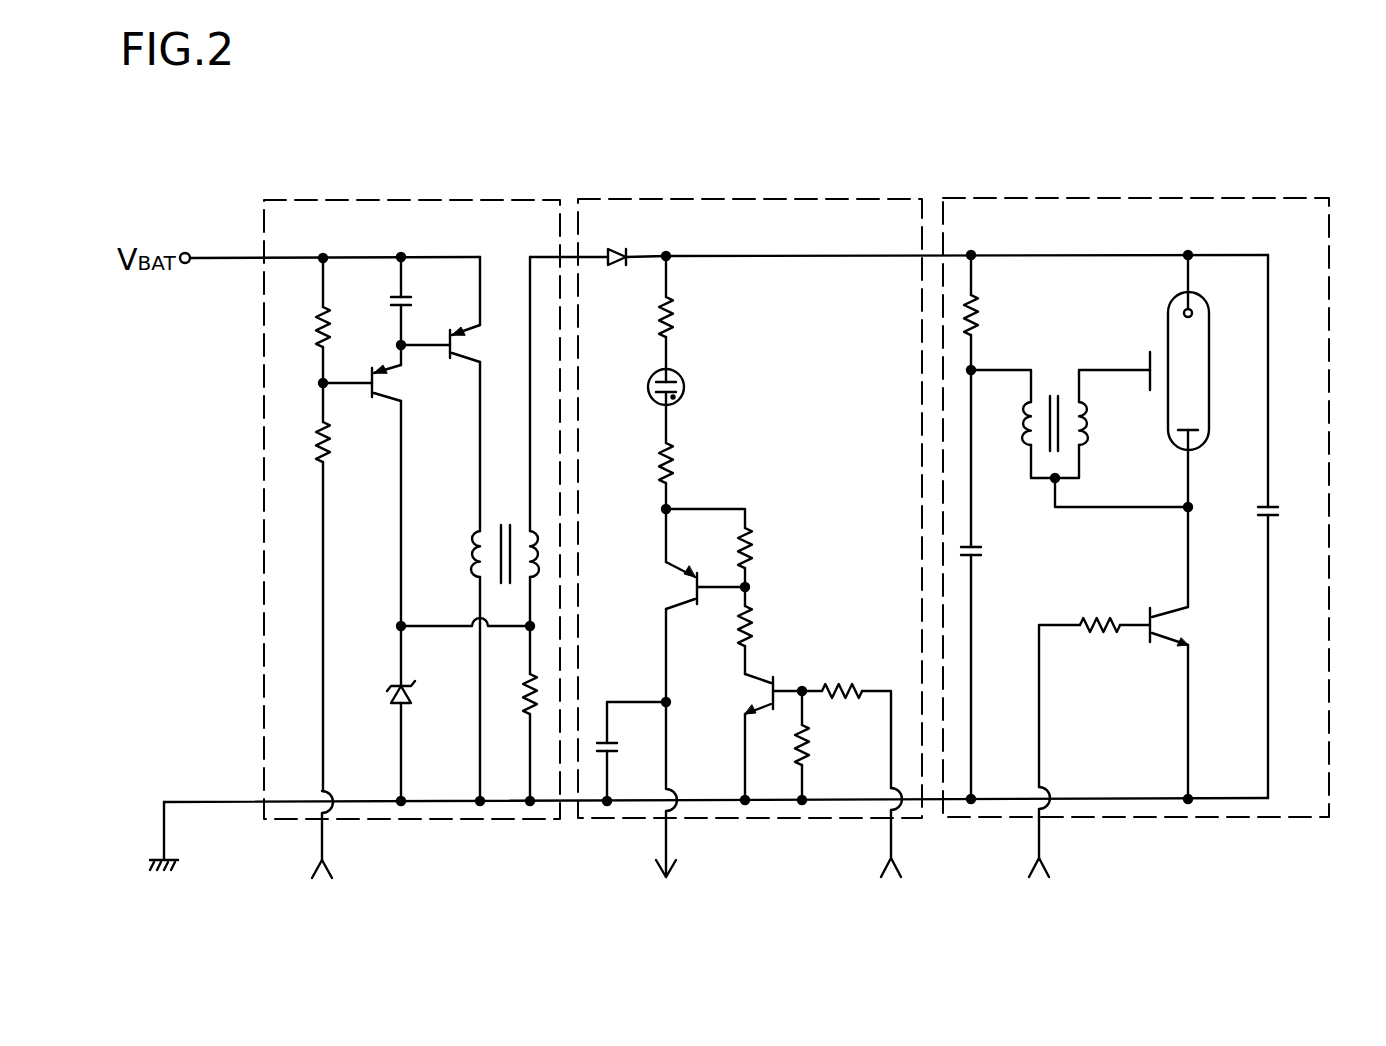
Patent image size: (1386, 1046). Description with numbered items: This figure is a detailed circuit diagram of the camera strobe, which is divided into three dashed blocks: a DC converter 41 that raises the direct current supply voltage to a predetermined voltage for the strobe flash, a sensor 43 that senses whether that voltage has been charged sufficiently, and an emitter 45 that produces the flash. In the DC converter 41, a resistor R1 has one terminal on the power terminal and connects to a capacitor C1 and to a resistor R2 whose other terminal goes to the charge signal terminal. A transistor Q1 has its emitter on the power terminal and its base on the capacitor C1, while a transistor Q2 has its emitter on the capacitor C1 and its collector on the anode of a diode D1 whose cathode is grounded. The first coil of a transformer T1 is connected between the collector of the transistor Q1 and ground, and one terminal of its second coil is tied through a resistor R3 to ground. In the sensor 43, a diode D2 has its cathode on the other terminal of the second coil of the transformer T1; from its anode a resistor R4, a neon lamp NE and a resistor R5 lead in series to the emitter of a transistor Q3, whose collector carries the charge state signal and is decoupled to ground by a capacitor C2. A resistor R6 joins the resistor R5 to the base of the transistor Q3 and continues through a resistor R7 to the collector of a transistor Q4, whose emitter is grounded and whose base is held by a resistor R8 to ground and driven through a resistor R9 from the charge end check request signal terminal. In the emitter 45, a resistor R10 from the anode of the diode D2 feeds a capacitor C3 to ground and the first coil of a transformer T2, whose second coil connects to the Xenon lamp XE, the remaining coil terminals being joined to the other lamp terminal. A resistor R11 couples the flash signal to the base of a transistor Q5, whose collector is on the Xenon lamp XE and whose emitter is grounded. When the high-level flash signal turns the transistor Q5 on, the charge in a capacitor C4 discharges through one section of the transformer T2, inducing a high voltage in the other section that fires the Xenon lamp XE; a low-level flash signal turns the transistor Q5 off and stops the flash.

The DC converter 41 is at (412, 200).
The sensor 43 is at (758, 199).
The emitter 45 is at (1150, 198).
The resistor R1 is at (309, 318).
The resistor R2 is at (309, 585).
The resistor R3 is at (512, 715).
The resistor R4 is at (683, 312).
The resistor R5 is at (683, 457).
The resistor R6 is at (727, 548).
The resistor R7 is at (763, 630).
The resistor R8 is at (820, 747).
The resistor R9 is at (846, 724).
The resistor R10 is at (994, 310).
The resistor R11 is at (1094, 690).
The capacitor C1 is at (419, 299).
The capacitor C2 is at (633, 751).
The capacitor C3 is at (988, 586).
The capacitor C4 is at (1285, 526).
The transistor Q1 is at (456, 394).
The transistor Q2 is at (378, 485).
The transistor Q3 is at (694, 605).
The transistor Q4 is at (760, 739).
The transistor Q5 is at (1185, 655).
The diode D1 is at (420, 715).
The diode D2 is at (598, 241).
The transformer T1 is at (505, 531).
The transformer T2 is at (1079, 429).
The neon lamp NE is at (689, 387).
The Xenon lamp XE is at (1212, 379).